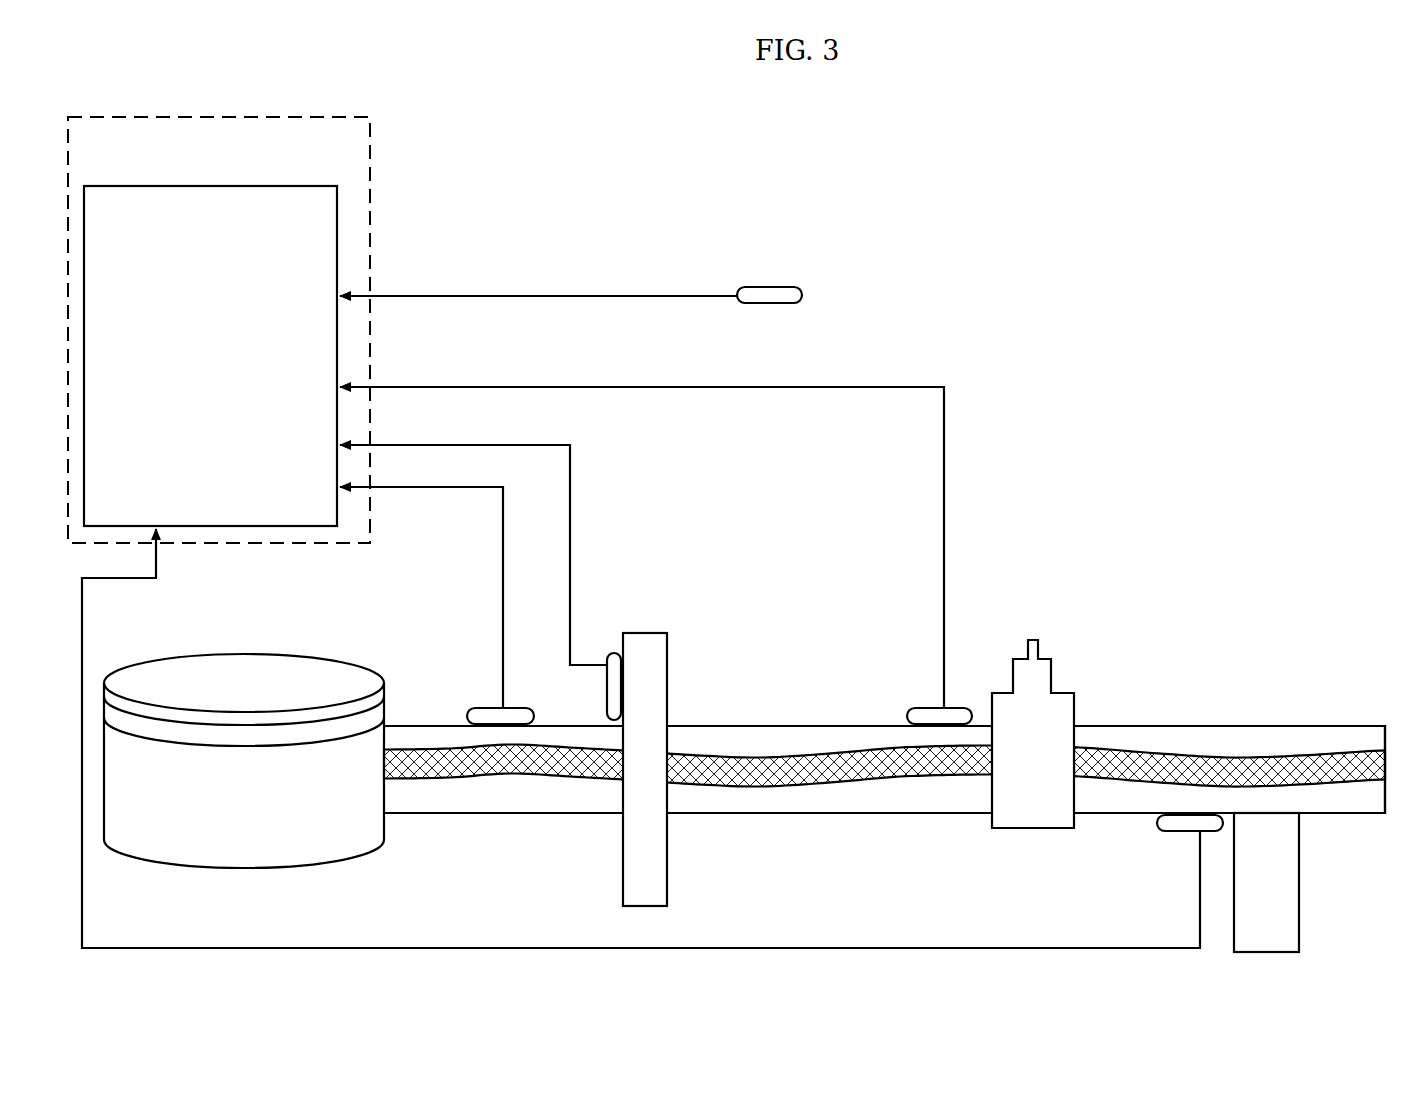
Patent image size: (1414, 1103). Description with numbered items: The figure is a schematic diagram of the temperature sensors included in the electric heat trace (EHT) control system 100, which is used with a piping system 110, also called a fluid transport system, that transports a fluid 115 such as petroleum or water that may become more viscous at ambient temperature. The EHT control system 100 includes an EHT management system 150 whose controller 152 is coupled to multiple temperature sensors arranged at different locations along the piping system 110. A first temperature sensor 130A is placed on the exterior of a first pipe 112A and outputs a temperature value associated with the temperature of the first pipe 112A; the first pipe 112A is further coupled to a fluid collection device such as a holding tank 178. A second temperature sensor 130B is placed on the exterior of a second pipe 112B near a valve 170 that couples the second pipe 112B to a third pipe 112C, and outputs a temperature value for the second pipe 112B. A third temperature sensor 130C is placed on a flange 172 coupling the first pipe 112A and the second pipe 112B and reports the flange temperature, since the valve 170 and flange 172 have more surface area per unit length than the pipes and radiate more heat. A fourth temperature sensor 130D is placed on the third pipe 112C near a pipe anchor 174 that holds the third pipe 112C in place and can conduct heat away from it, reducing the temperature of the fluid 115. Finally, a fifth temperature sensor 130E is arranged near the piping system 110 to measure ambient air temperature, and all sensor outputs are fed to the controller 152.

The electric heat trace (EHT) control system 100 is at (161, 70).
The piping system 110 is at (1306, 570).
The first pipe 112A is at (518, 813).
The second pipe 112B is at (792, 815).
The third pipe 112C is at (1215, 726).
The fluid 115 is at (721, 757).
The first temperature sensor 130A is at (497, 708).
The second temperature sensor 130B is at (935, 710).
The third temperature sensor 130C is at (606, 681).
The fourth temperature sensor 130D is at (1186, 832).
The fifth temperature sensor 130E is at (804, 286).
The EHT management system 150 is at (370, 117).
The controller 152 is at (155, 186).
The valve 170 is at (993, 828).
The flange 172 is at (622, 863).
The pipe anchor 174 is at (1300, 883).
The holding tank 178 is at (277, 866).